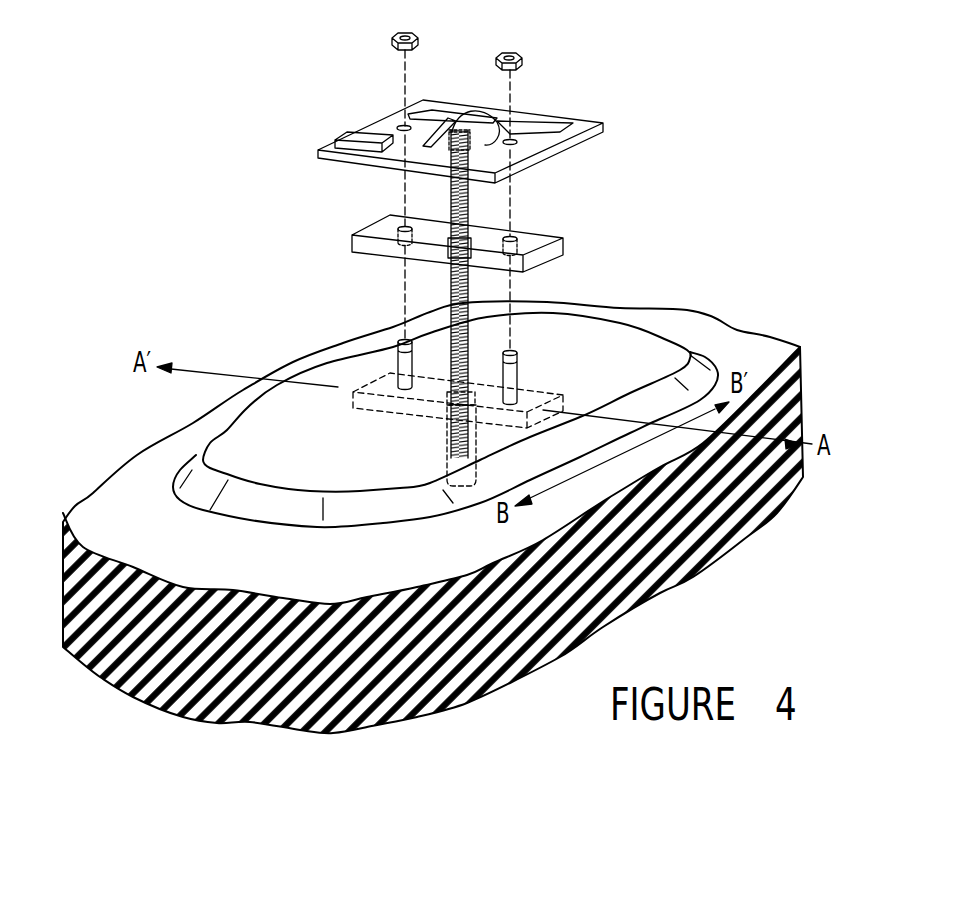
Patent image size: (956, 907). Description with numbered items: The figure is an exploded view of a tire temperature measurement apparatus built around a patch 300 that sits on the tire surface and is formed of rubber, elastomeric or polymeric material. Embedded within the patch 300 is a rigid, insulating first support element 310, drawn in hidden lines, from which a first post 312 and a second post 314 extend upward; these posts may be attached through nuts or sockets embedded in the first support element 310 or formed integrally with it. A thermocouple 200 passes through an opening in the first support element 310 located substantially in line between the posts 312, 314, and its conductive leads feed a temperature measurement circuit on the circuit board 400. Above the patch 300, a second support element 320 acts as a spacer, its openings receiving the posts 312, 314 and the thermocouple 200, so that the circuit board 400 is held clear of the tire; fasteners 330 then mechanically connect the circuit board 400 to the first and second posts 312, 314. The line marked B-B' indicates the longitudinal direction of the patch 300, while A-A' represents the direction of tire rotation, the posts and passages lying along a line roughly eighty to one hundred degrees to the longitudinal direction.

The thermocouple 200 is at (453, 286).
The patch 300 is at (203, 480).
The first support element 310 is at (338, 388).
The first post 312 is at (395, 352).
The second post 314 is at (517, 363).
The second support element 320 is at (550, 252).
The fasteners 330 is at (392, 40).
The circuit board 400 is at (603, 122).